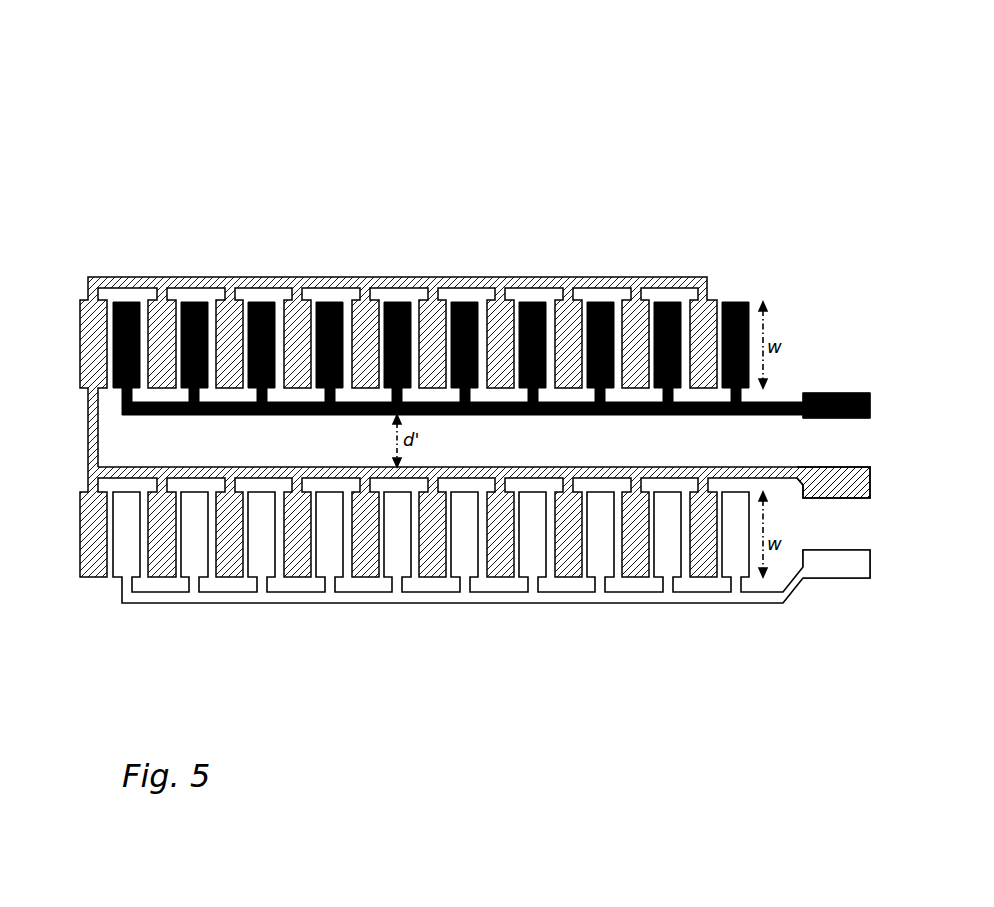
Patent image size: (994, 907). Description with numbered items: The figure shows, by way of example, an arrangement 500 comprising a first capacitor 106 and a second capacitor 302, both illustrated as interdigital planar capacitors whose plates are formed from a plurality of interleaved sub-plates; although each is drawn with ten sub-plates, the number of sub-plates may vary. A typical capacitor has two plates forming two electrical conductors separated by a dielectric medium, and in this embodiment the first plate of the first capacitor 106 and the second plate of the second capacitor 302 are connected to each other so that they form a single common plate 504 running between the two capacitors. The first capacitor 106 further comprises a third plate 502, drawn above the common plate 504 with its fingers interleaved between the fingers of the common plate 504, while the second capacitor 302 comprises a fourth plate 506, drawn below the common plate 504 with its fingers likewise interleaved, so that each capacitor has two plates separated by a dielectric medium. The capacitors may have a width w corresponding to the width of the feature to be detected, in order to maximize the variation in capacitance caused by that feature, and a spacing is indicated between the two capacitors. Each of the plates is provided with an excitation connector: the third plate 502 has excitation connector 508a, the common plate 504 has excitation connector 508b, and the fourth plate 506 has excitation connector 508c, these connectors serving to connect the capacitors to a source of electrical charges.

The arrangement 500 is at (116, 134).
The first capacitor 106 is at (72, 275).
The second capacitor 302 is at (72, 465).
The third plate 502 is at (778, 403).
The common plate 504 is at (707, 467).
The fourth plate 506 is at (773, 605).
The excitation connector 508a is at (853, 393).
The excitation connector 508b is at (847, 467).
The excitation connector 508c is at (853, 550).